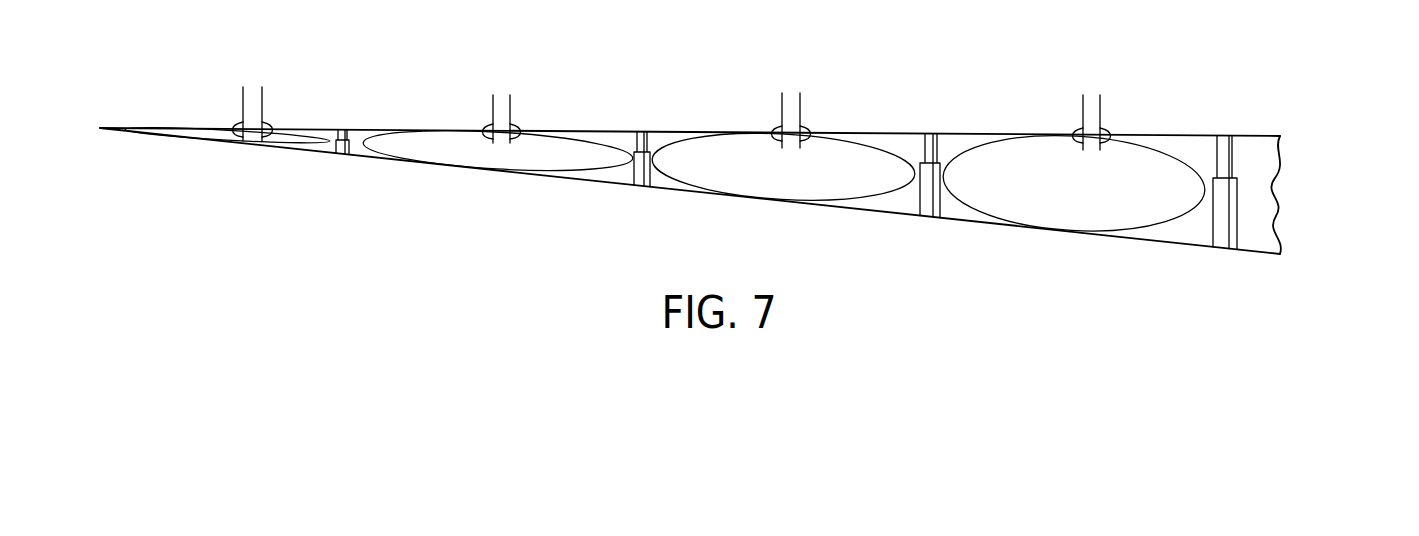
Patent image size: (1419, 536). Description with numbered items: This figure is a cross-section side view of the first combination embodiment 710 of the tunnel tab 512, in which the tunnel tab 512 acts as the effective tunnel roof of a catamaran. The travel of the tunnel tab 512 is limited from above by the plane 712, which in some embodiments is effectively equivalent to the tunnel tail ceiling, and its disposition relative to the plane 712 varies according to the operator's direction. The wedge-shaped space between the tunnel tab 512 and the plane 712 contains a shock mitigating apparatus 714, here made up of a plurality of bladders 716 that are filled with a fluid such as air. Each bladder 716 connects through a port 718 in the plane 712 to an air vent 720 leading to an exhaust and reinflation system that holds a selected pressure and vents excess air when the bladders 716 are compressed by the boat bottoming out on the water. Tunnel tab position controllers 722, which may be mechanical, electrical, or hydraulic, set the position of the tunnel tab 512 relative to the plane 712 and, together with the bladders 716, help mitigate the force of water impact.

The first combination embodiment 710 is at (753, 170).
The plane 712 is at (990, 133).
The tunnel tab 512 is at (1180, 247).
The shock mitigating apparatus 714 is at (1288, 202).
The bladders 716 is at (288, 143).
The ports 718 is at (264, 123).
The air vents 720 is at (252, 90).
The tunnel tab position controllers 722 is at (343, 128).